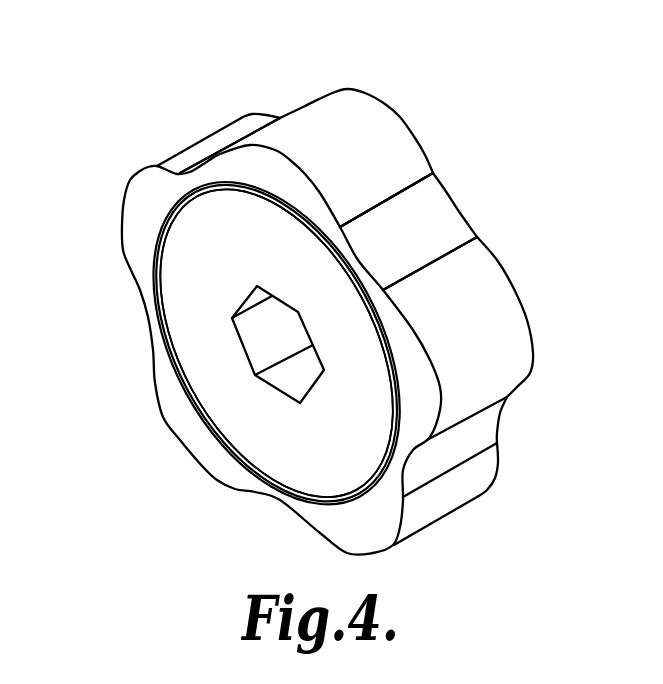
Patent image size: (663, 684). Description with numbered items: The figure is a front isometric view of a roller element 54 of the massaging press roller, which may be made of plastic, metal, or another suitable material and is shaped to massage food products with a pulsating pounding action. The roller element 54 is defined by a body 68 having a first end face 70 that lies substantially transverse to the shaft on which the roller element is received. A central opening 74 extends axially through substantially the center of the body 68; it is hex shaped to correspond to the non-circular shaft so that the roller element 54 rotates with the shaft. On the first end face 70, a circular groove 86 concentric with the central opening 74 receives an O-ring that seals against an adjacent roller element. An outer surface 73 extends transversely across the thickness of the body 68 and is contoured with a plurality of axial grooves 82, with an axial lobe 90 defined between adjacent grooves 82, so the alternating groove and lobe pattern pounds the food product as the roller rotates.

The roller element 54 is at (291, 296).
The body 68 is at (204, 350).
The first end face 70 is at (138, 246).
The outer surface 73 is at (398, 155).
The central opening 74 is at (288, 378).
The grooves 82 is at (441, 210).
The circular groove 86 is at (178, 208).
The axial lobe 90 is at (354, 92).